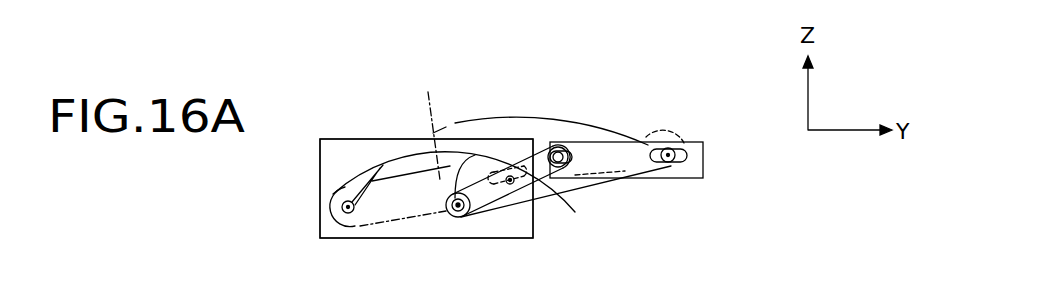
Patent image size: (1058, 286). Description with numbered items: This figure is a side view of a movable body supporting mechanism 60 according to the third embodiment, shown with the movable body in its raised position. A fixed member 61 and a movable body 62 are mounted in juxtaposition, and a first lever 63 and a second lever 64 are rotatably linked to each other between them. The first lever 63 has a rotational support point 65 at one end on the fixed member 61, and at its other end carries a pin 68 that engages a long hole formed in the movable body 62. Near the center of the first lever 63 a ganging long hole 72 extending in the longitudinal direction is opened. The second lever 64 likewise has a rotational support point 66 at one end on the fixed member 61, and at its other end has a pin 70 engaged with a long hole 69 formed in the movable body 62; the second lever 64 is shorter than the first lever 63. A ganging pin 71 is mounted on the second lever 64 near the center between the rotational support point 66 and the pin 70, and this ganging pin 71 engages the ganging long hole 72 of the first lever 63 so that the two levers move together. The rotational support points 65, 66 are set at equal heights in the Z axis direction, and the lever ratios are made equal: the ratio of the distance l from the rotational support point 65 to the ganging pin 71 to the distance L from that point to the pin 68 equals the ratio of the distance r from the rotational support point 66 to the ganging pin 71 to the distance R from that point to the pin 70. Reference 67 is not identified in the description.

The movable body supporting mechanism 60 is at (705, 78).
The fixed member 61 is at (418, 140).
The movable body 62 is at (628, 148).
The first lever 63 is at (423, 124).
The second lever 64 is at (540, 150).
The rotational support point 65 is at (344, 206).
The rotational support point 66 is at (459, 218).
The pin 67 is at (680, 160).
The pin 68 is at (674, 166).
The long hole 69 is at (598, 182).
The pin 70 is at (560, 168).
The ganging pin 71 is at (510, 176).
The ganging long hole 72 is at (519, 165).